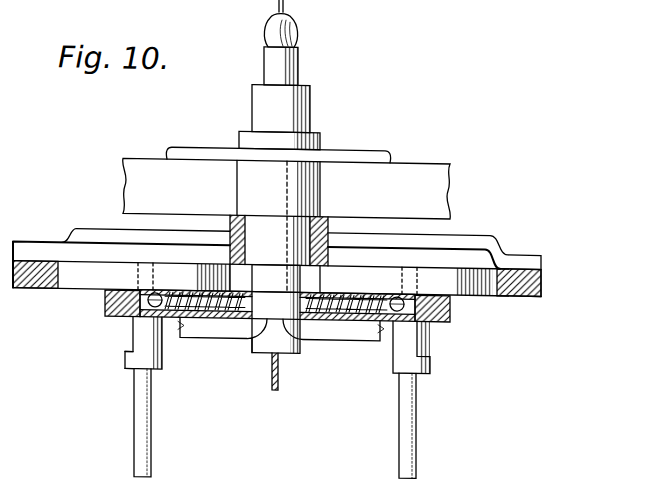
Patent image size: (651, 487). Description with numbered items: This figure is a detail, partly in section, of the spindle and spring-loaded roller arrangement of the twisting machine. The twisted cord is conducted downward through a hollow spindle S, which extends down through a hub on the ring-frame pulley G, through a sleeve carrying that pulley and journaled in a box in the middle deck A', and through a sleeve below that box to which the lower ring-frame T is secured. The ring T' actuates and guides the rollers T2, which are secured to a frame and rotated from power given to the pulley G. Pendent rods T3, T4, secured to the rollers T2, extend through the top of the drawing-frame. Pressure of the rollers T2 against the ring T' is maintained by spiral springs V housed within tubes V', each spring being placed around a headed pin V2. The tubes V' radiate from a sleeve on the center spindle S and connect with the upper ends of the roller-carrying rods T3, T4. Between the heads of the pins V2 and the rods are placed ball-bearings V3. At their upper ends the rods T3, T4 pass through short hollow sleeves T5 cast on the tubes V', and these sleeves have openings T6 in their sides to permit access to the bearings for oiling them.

The hollow spindle S is at (266, 71).
The ring-frame pulley G is at (302, 148).
The middle deck A' is at (287, 188).
The lower ring-frame T is at (277, 254).
The ring T' is at (290, 293).
The rollers T2 is at (58, 265).
The pendent rod T3 is at (142, 414).
The pendent rod T4 is at (411, 407).
The short hollow sleeve T5 is at (126, 369).
The opening T6 is at (474, 356).
The spiral spring V is at (276, 341).
The tube V' is at (277, 293).
The headed pin V2 is at (373, 320).
The ball-bearing V3 is at (421, 345).